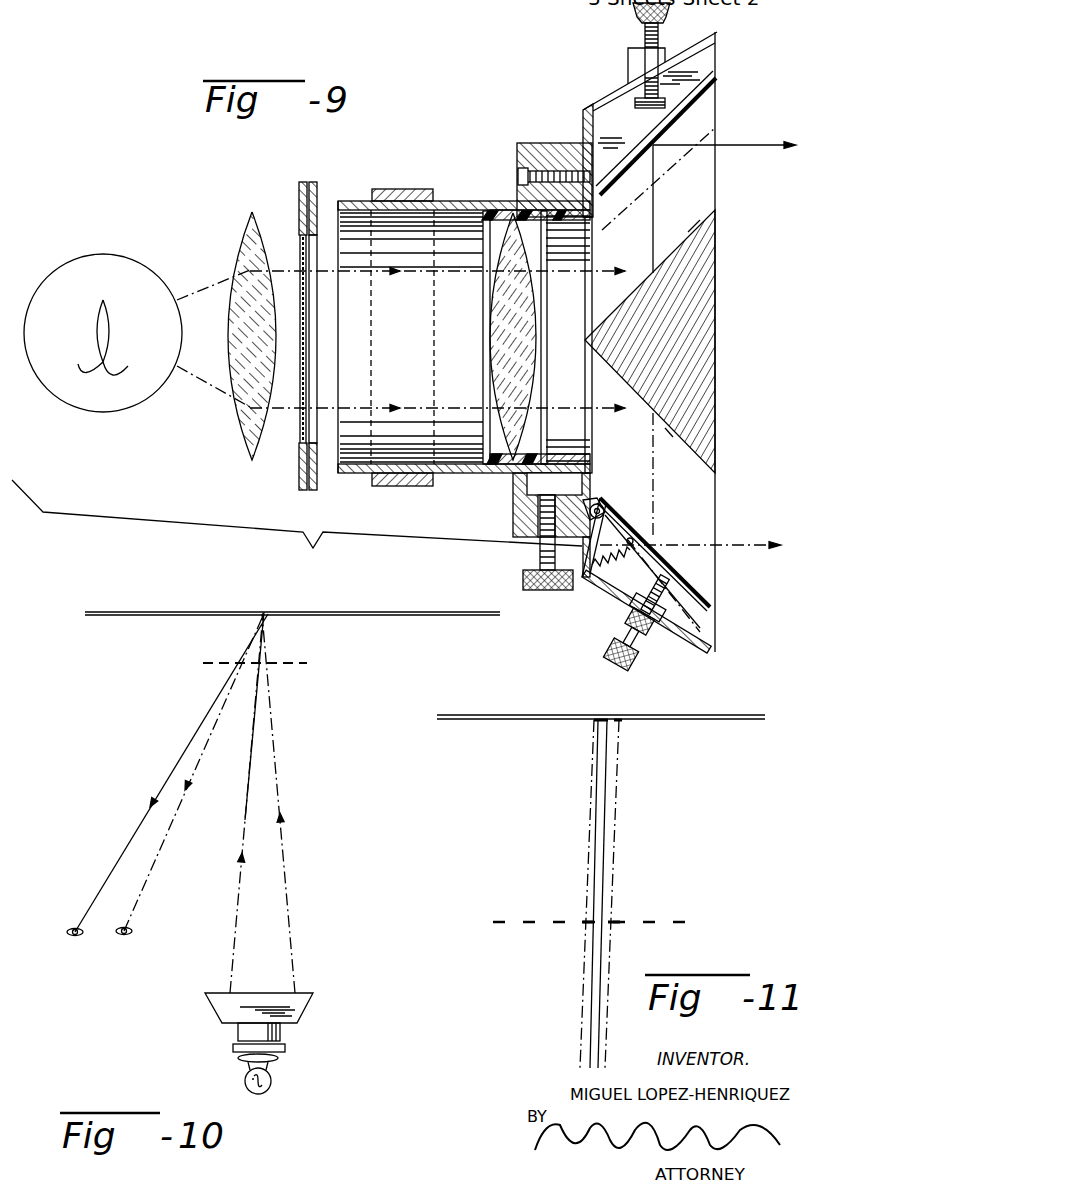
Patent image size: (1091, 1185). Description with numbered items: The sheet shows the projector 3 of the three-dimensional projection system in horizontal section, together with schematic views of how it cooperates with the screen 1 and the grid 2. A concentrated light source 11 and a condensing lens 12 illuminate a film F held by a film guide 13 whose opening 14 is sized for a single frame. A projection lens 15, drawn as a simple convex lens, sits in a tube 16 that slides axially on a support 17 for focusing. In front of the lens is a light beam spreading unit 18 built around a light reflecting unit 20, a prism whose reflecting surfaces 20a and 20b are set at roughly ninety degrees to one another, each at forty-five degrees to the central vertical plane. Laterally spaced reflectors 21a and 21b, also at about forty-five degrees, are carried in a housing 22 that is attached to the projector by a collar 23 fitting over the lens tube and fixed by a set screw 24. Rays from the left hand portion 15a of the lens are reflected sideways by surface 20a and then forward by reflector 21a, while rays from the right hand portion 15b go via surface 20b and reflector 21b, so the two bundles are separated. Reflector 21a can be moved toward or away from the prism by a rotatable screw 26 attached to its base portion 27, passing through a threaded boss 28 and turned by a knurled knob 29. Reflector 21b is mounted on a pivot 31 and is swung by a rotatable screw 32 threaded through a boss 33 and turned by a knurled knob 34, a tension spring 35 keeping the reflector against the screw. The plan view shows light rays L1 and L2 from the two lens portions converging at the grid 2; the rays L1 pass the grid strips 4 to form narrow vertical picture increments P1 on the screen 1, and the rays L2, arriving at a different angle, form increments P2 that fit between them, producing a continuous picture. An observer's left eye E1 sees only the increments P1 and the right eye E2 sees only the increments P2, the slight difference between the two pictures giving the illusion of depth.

In FIG. 10, the screen 1 is at (152, 616).
In FIG. 11, the screen 1 is at (702, 716).
In FIG. 10, the grid 2 is at (295, 665).
In FIG. 11, the grid 2 is at (503, 925).
In FIG. 9, the projector 3 is at (297, 525).
In FIG. 11, the grid strips 4 is at (588, 925).
In FIG. 9, the concentrated light source 11 is at (82, 260).
In FIG. 9, the condensing lens 12 is at (245, 437).
In FIG. 9, the film guide 13 is at (301, 491).
In FIG. 9, the opening 14 is at (299, 432).
In FIG. 9, the film F is at (303, 258).
In FIG. 9, the projection lens 15 is at (489, 341).
In FIG. 9, the left hand portion of the projection lens 15a is at (527, 277).
In FIG. 9, the right hand portion of the projection lens 15b is at (515, 418).
In FIG. 9, the tube 16 is at (477, 476).
In FIG. 9, the support 17 is at (390, 480).
In FIG. 9, the light beam spreading unit 18 is at (605, 90).
In FIG. 9, the light reflecting unit 20 is at (708, 307).
In FIG. 9, the reflecting surface 20a is at (688, 232).
In FIG. 9, the reflecting surface 20b is at (673, 437).
In FIG. 9, the reflector 21a is at (713, 107).
In FIG. 9, the reflector 21b is at (690, 587).
In FIG. 9, the housing 22 is at (582, 117).
In FIG. 9, the collar 23 is at (573, 222).
In FIG. 9, the set screw 24 is at (553, 592).
In FIG. 9, the rotatable screw 26 is at (646, 32).
In FIG. 9, the base portion 27 is at (707, 66).
In FIG. 9, the boss 28 is at (628, 60).
In FIG. 9, the knurled knob 29 is at (670, 13).
In FIG. 9, the pivot 31 is at (600, 497).
In FIG. 9, the rotatable screw 32 is at (666, 629).
In FIG. 9, the boss 33 is at (614, 625).
In FIG. 9, the knurled knob 34 is at (636, 675).
In FIG. 9, the tension spring 35 is at (633, 535).
In FIG. 10, the light rays L1 is at (240, 876).
In FIG. 11, the light rays L1 is at (612, 828).
In FIG. 10, the light rays L2 is at (285, 895).
In FIG. 11, the light rays L2 is at (596, 782).
In FIG. 10, the left eye E1 is at (78, 936).
In FIG. 10, the right eye E2 is at (129, 934).
In FIG. 11, the picture increments P1 is at (620, 722).
In FIG. 11, the picture increments P2 is at (595, 723).